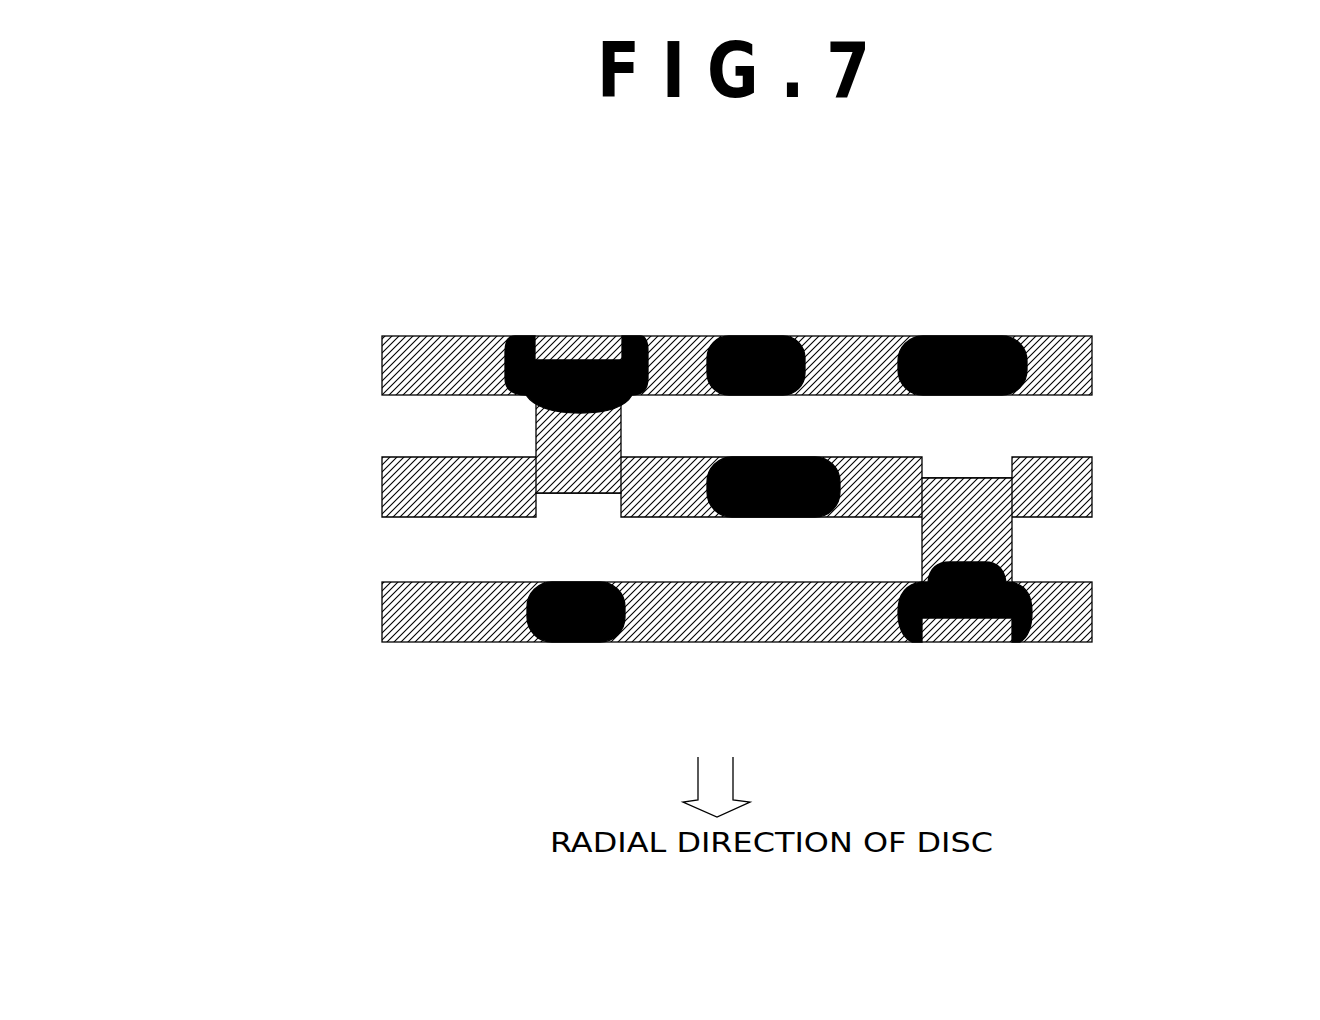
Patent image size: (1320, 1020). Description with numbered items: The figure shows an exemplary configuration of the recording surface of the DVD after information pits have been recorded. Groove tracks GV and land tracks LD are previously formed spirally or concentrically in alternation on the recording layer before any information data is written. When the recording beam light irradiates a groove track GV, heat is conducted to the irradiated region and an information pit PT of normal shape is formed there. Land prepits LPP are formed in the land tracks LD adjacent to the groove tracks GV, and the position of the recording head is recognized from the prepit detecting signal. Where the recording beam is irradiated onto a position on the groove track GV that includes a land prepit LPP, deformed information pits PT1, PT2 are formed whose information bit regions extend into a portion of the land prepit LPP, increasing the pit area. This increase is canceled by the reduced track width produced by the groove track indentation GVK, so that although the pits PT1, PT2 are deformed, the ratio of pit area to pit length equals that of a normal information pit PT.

The groove track GV is at (382, 598).
The groove track indentation GVK is at (572, 316).
The information pit PT is at (810, 457).
The deformed information pit PT1 is at (495, 343).
The deformed information pit PT2 is at (1033, 607).
The land prepit LPP is at (522, 435).
The land track LD is at (1082, 535).